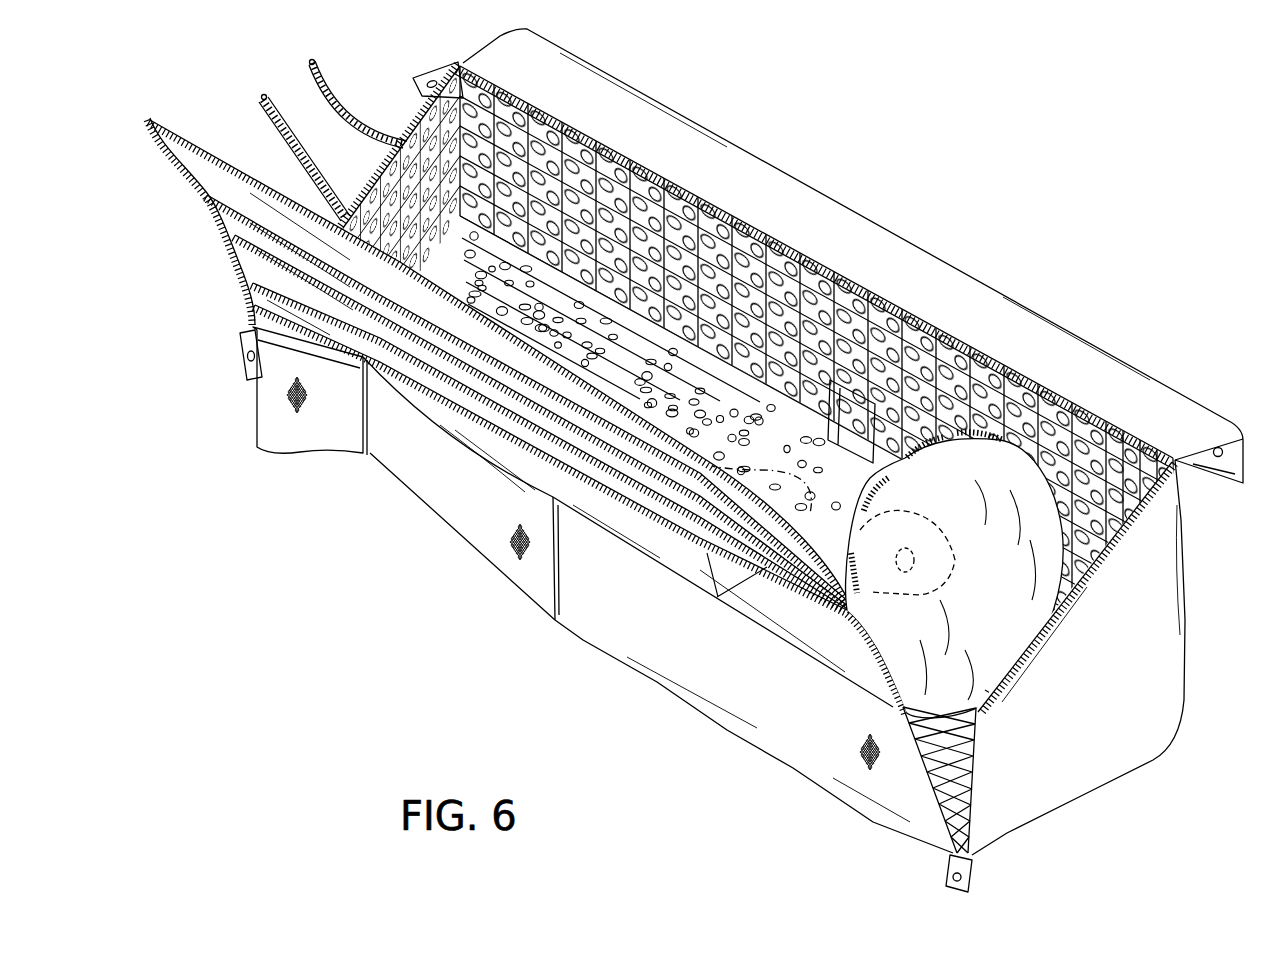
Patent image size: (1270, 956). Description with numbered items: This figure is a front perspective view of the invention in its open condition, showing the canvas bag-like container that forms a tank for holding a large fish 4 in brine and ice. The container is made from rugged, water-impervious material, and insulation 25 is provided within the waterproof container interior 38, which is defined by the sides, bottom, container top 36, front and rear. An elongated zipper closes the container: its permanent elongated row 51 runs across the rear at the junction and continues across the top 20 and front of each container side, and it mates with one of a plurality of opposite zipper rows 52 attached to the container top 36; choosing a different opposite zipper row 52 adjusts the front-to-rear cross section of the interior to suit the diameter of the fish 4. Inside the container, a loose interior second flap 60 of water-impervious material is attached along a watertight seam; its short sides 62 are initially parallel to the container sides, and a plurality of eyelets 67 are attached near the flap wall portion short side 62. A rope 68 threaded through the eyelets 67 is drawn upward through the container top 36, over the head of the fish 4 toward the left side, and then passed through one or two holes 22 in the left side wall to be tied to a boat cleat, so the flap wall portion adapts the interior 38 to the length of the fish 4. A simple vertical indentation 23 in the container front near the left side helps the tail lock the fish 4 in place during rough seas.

The fish 4 is at (813, 267).
The top of container side 20 is at (410, 128).
The holes 22 is at (352, 200).
The vertical indentation 23 is at (358, 452).
The insulation 25 is at (490, 130).
The container top 36 is at (228, 182).
The container interior 38 is at (1096, 430).
The permanent elongated zipper row 51 is at (617, 149).
The opposite zipper row 52 is at (157, 116).
The interior second flap 60 is at (1032, 660).
The interior flap short sides 62 is at (957, 368).
The eyelets 67 is at (863, 510).
The rope 68 is at (263, 97).